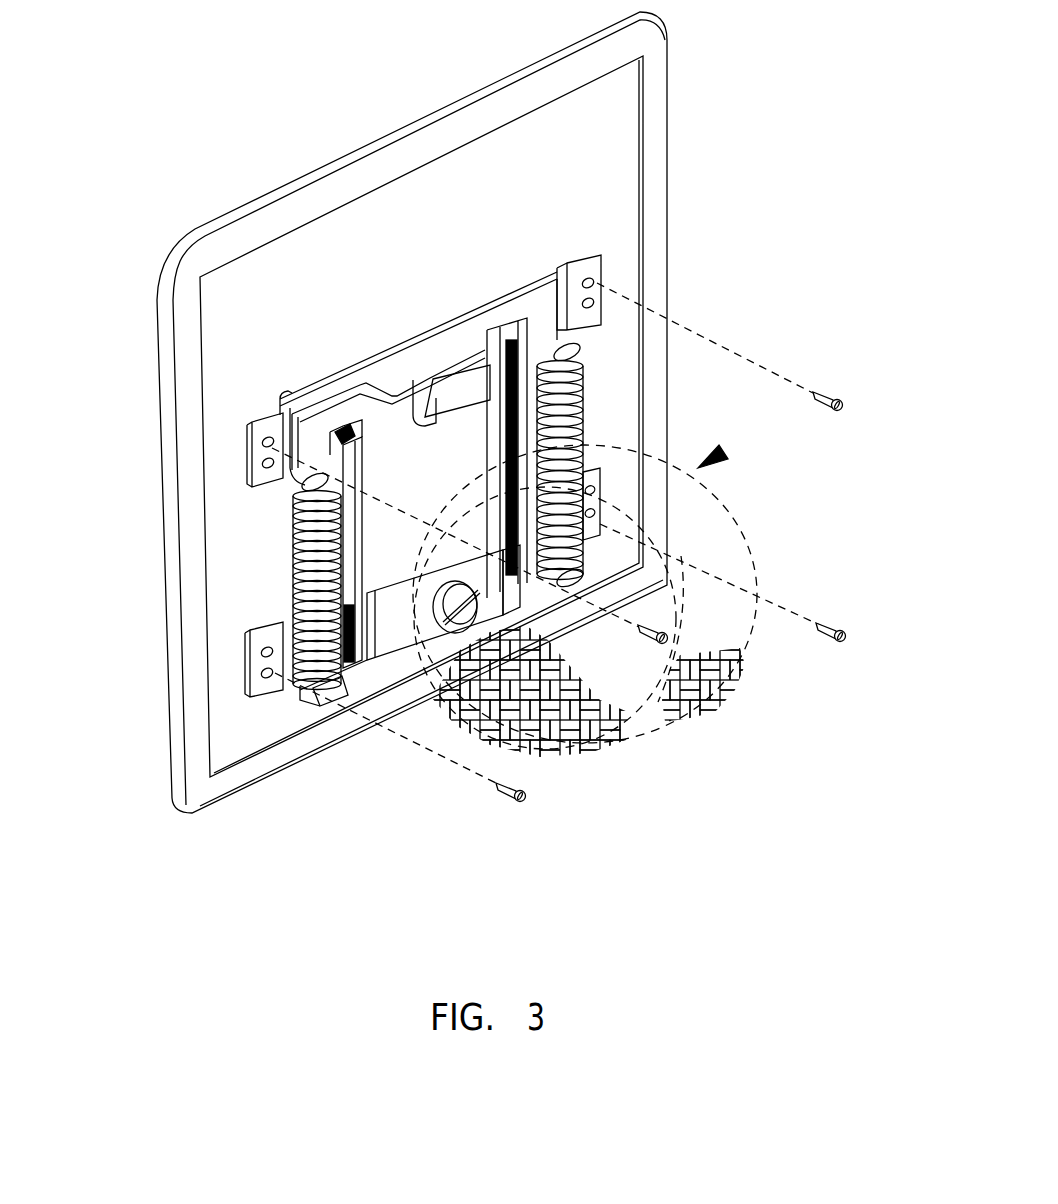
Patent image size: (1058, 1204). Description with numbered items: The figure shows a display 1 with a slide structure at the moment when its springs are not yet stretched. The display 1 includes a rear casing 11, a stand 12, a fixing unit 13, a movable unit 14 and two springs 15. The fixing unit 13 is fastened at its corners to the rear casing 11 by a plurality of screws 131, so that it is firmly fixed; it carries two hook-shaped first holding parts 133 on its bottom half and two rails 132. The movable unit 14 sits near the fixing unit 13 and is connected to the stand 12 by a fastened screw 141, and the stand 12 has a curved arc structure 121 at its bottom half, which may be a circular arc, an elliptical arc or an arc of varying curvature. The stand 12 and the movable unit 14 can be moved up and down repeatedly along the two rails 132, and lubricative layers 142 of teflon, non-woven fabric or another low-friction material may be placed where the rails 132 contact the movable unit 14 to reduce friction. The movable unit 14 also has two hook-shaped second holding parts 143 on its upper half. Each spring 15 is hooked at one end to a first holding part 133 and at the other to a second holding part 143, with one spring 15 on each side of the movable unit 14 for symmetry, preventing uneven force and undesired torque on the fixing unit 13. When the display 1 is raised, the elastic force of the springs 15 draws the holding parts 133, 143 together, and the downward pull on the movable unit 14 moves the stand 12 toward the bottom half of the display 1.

The display 1 is at (704, 906).
The rear casing 11 is at (612, 124).
The stand 12 is at (718, 457).
The arc structure 121 is at (555, 732).
The fixing unit 13 is at (426, 352).
The screws 131 is at (832, 394).
The rails 132 is at (490, 435).
The first holding parts 133 is at (323, 703).
The movable unit 14 is at (406, 400).
The screw 141 is at (467, 617).
The lubricative layers 142 is at (519, 412).
The second holding parts 143 is at (265, 470).
The springs 15 is at (295, 557).